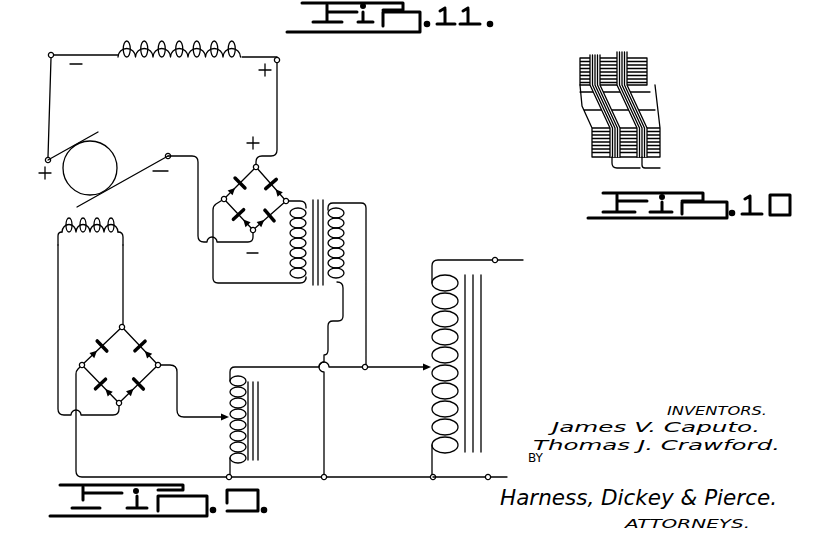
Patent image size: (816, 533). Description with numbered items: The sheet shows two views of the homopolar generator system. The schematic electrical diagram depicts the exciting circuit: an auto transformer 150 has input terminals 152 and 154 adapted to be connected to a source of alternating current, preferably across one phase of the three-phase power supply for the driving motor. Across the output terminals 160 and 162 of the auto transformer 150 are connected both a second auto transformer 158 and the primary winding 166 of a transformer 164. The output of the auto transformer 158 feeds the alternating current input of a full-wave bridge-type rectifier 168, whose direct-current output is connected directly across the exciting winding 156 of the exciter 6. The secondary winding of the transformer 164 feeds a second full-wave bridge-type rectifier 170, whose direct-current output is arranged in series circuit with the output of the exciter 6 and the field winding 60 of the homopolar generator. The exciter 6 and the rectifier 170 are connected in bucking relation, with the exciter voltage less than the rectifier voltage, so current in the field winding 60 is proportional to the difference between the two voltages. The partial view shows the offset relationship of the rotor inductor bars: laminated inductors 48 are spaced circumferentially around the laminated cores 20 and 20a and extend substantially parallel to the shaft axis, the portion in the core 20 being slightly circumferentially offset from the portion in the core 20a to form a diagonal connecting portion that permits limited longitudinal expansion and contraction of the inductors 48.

In FIG. 9, the field winding 60 is at (181, 41).
In FIG. 9, the exciter 6 is at (136, 143).
In FIG. 9, the full-wave bridge-type rectifier 170 is at (273, 183).
In FIG. 9, the transformer 164 is at (322, 201).
In FIG. 9, the primary winding 166 is at (340, 247).
In FIG. 9, the exciting winding 156 is at (112, 218).
In FIG. 9, the full-wave bridge-type rectifier 168 is at (146, 352).
In FIG. 9, the auto transformer 158 is at (258, 416).
In FIG. 9, the output terminal 160 is at (390, 365).
In FIG. 9, the output terminal 162 is at (371, 475).
In FIG. 9, the auto transformer 150 is at (483, 342).
In FIG. 9, the input terminal 152 is at (496, 259).
In FIG. 9, the input terminal 154 is at (488, 477).
In FIG. 10, the laminated inductors 48 is at (645, 175).
In FIG. 10, the laminated core 20a is at (647, 75).
In FIG. 10, the laminated core 20 is at (658, 150).